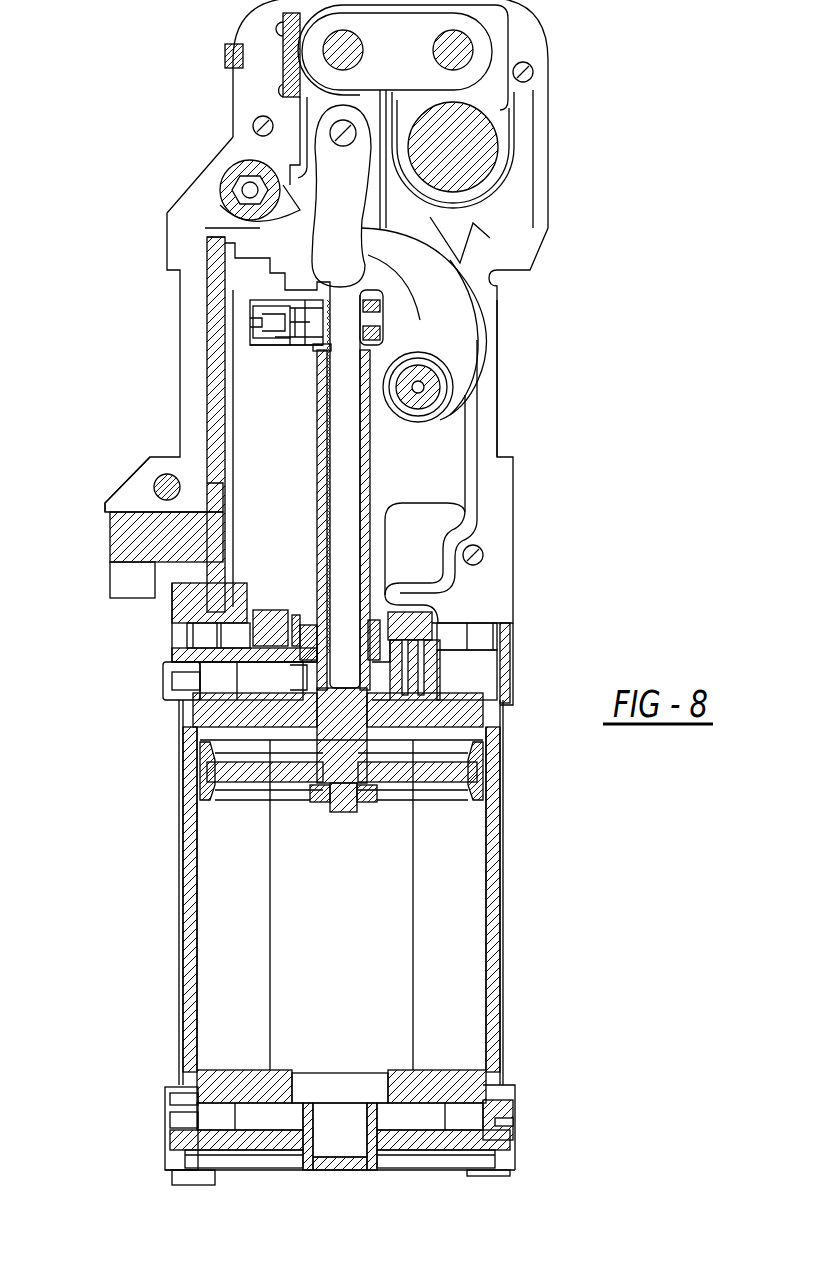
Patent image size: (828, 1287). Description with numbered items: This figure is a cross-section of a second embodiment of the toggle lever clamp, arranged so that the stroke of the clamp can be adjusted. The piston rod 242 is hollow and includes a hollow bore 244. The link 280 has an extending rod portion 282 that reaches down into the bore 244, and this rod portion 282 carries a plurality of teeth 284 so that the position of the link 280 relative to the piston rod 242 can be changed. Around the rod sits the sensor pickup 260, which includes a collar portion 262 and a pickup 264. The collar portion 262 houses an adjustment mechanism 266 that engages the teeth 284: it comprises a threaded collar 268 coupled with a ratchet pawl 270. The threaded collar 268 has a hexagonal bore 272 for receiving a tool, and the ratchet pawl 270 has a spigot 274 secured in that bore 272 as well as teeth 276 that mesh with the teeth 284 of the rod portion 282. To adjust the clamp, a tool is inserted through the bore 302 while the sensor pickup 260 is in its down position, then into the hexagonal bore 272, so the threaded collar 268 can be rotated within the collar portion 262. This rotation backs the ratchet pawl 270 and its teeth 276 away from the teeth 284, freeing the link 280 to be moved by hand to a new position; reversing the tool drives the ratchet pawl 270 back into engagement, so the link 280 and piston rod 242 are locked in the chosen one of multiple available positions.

The piston rod 242 is at (362, 490).
The hollow bore 244 is at (350, 690).
The sensor pickup 260 is at (252, 348).
The collar portion 262 is at (280, 347).
The pickup 264 is at (280, 303).
The adjustment mechanism 266 is at (242, 318).
The threaded collar 268 is at (262, 328).
The ratchet pawl 270 is at (315, 322).
The hexagonal bore 272 is at (262, 316).
The spigot 274 is at (300, 316).
The teeth 276 is at (312, 320).
The link 280 is at (370, 203).
The rod portion 282 is at (370, 437).
The teeth 284 is at (327, 527).
The bore 302 is at (153, 552).